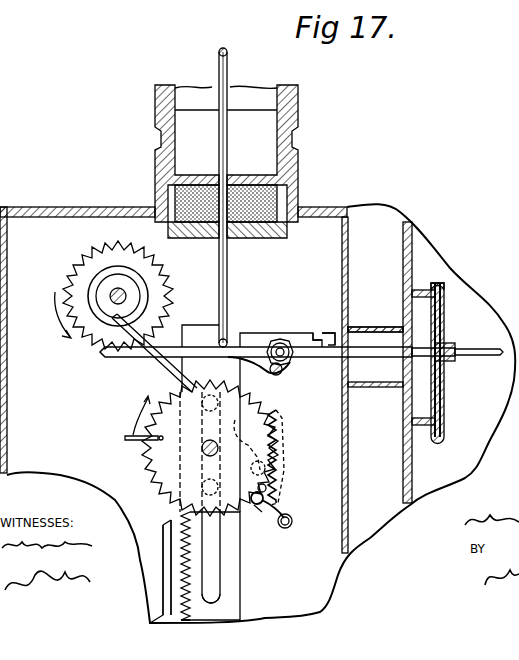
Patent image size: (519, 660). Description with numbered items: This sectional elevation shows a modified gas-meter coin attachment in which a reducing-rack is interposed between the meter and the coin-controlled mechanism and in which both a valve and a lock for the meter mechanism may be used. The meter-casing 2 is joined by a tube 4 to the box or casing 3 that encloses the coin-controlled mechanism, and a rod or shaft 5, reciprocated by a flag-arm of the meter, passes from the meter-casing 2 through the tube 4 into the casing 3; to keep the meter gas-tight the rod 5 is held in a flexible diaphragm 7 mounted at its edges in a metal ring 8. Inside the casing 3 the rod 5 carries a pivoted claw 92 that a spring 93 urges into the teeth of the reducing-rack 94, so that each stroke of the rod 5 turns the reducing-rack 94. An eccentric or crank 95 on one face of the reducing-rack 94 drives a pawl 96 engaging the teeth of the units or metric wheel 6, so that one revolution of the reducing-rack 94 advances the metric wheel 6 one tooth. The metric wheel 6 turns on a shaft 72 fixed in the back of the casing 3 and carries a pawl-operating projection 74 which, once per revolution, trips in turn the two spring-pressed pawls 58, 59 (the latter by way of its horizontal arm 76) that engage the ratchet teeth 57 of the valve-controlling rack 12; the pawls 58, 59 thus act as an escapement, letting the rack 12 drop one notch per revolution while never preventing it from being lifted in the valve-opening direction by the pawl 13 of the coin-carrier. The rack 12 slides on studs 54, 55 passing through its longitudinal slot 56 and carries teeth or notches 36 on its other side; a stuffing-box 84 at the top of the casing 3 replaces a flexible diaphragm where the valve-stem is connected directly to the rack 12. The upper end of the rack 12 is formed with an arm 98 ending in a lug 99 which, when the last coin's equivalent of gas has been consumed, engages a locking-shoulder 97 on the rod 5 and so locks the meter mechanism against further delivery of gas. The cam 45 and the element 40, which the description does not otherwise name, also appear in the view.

The meter-casing 2 is at (485, 448).
The box or casing 3 is at (217, 368).
The tube 4 is at (375, 320).
The rod or shaft 5 is at (478, 356).
The units or metric wheel 6 is at (205, 448).
The flexible diaphragm 7 is at (441, 330).
The metal ring 8 is at (435, 276).
The valve-controlling rack 12 is at (224, 488).
The pawl of the coin-carrier 13 is at (158, 567).
The teeth or notches 36 is at (195, 609).
The rod 40 is at (236, 56).
The cam 45 is at (268, 490).
The stud 54 is at (218, 404).
The stud 55 is at (204, 488).
The longitudinal slot 56 is at (216, 596).
The notches or ratchet teeth 57 is at (255, 517).
The spring-pressed pawl or click 58 is at (280, 454).
The spring-pressed pawl or click 59 is at (248, 433).
The shaft 72 is at (200, 442).
The pawl-operating projection 74 is at (135, 436).
The horizontal arm 76 is at (264, 499).
The stuffing-box 84 is at (237, 163).
The pivoted claw 92 is at (180, 345).
The spring 93 is at (261, 372).
The reducing-rack 94 is at (80, 275).
The eccentric or crank 95 is at (140, 288).
The pawl 96 is at (150, 366).
The locking-shoulder 97 is at (312, 338).
The arm 98 is at (258, 332).
The lug 99 is at (325, 333).